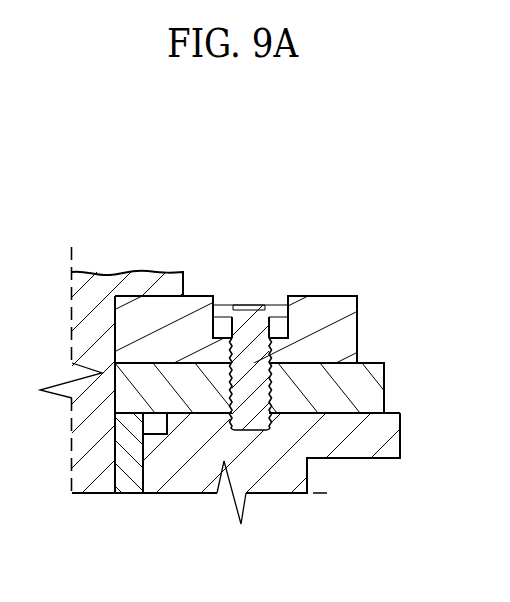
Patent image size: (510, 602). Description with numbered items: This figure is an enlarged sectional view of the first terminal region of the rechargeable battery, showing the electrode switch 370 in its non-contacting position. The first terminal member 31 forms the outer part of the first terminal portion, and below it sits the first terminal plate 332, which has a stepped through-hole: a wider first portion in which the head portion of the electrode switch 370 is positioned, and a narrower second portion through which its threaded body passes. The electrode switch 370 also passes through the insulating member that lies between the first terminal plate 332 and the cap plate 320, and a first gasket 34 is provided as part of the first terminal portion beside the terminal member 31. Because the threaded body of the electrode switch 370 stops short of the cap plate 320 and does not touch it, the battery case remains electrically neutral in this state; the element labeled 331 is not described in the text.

The first terminal member 31 is at (147, 288).
The electrode switch 370 is at (250, 327).
The first terminal plate 332 is at (340, 333).
The lower bracket plate 331 is at (367, 385).
The first gasket 34 is at (127, 472).
The cap plate 320 is at (188, 470).